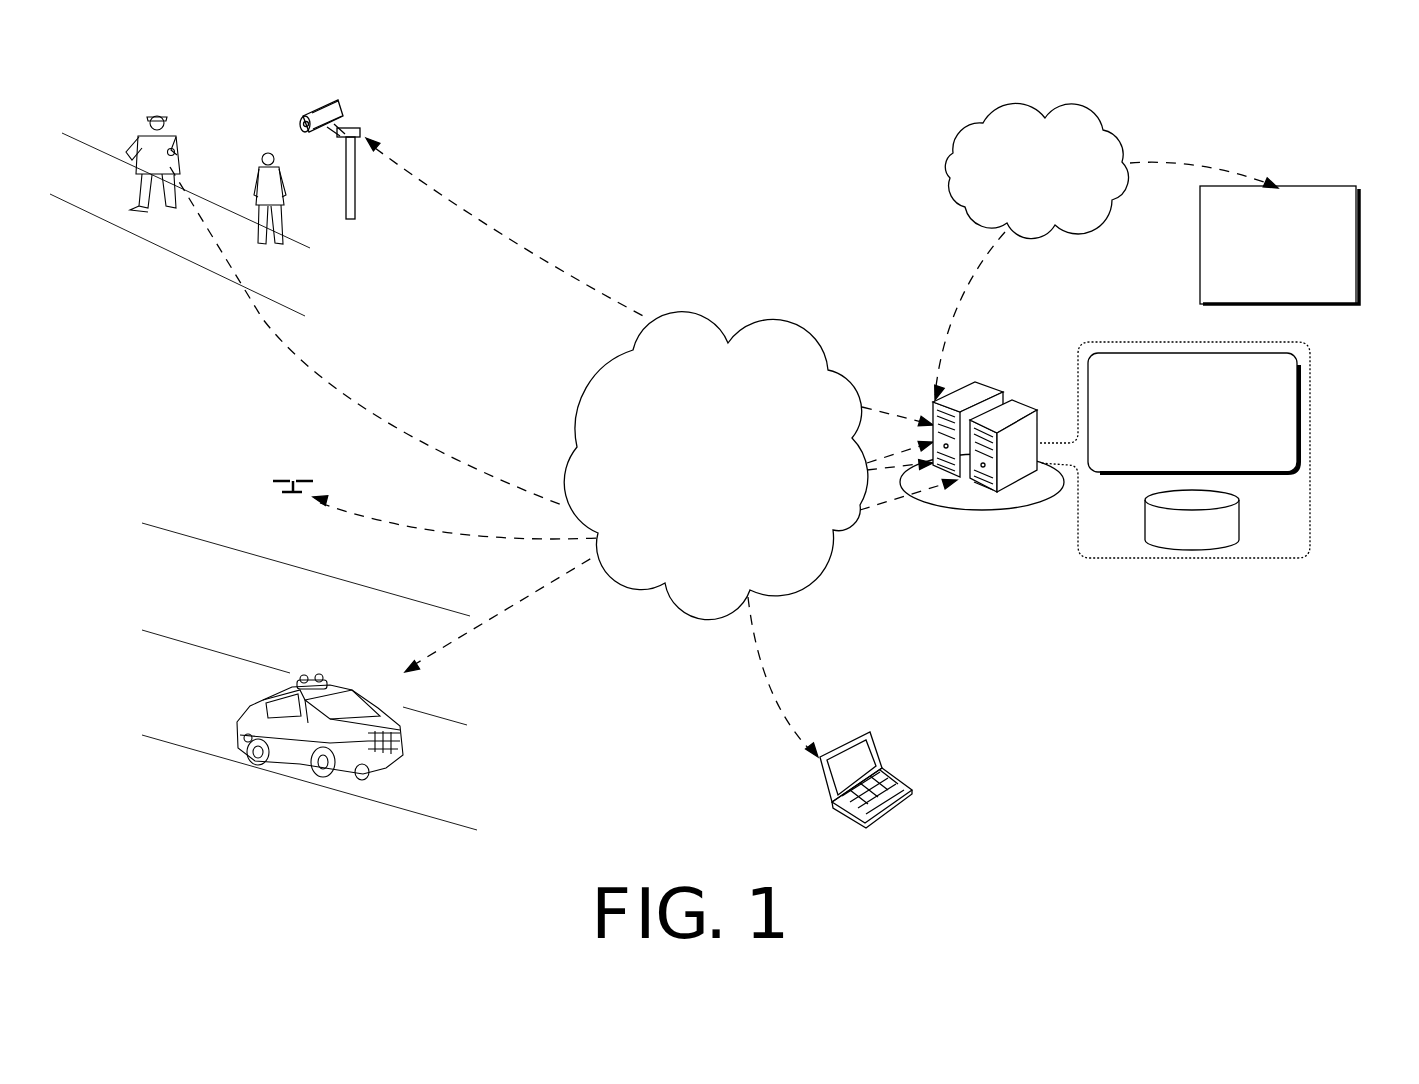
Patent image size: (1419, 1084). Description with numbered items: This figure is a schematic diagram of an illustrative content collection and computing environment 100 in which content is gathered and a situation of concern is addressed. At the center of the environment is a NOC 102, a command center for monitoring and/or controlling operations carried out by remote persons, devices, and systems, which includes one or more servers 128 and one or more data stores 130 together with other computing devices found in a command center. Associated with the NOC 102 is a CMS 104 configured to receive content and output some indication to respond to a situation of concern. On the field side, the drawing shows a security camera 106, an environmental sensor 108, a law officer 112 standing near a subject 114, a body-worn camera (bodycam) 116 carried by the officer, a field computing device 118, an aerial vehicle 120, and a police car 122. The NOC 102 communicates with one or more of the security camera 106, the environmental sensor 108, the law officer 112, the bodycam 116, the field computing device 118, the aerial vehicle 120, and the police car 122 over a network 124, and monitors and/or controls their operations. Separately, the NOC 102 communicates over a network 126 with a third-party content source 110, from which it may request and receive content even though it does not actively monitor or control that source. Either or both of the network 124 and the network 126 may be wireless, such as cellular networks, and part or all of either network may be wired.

The content collection and computing environment 100 is at (1288, 104).
The NOC 102 is at (984, 447).
The CMS 104 is at (1193, 413).
The security camera 106 is at (334, 100).
The environmental sensor 108 is at (360, 134).
The third-party content source 110 is at (1279, 245).
The law officer 112 is at (125, 100).
The subject 114 is at (248, 140).
The body-worn camera (bodycam) 116 is at (170, 160).
The field computing device 118 is at (912, 790).
The aerial vehicle 120 is at (262, 455).
The police car 122 is at (328, 645).
The network 124 is at (716, 466).
The network 126 is at (1036, 170).
The servers 128 is at (975, 382).
The data stores 130 is at (1240, 525).